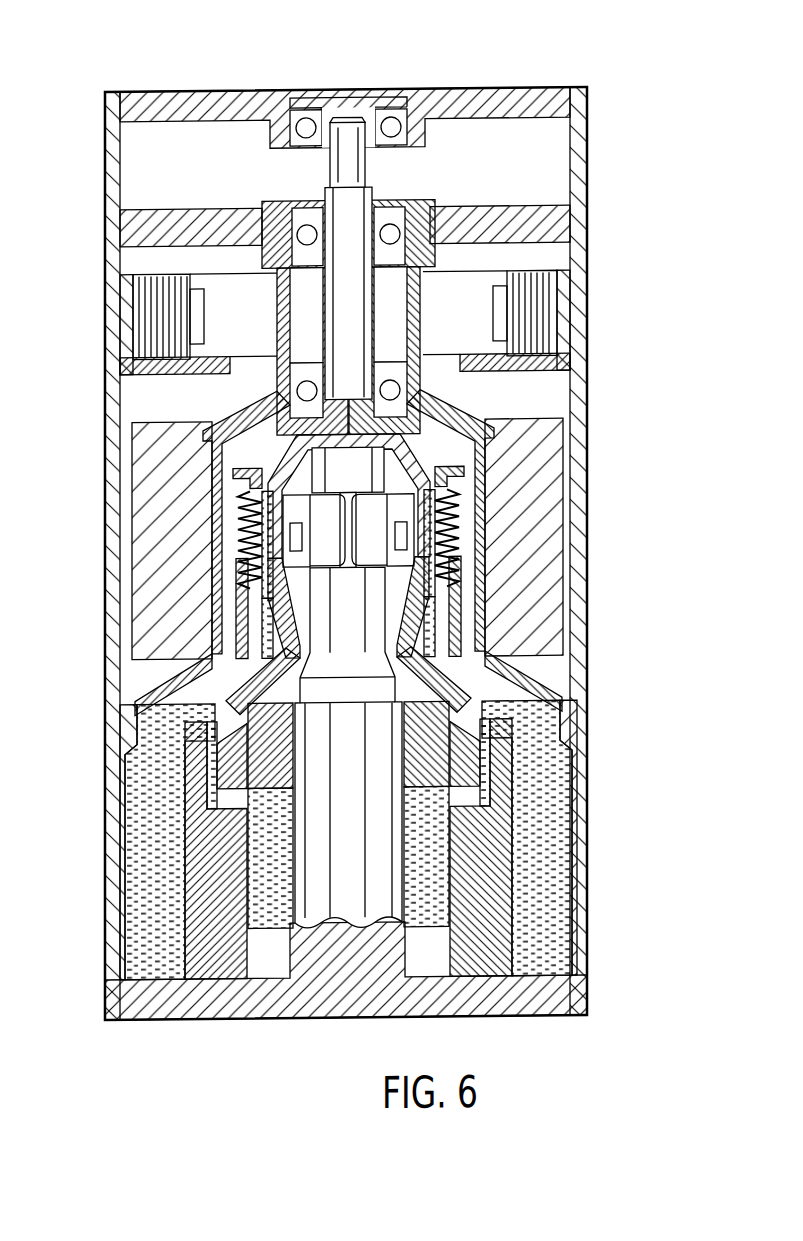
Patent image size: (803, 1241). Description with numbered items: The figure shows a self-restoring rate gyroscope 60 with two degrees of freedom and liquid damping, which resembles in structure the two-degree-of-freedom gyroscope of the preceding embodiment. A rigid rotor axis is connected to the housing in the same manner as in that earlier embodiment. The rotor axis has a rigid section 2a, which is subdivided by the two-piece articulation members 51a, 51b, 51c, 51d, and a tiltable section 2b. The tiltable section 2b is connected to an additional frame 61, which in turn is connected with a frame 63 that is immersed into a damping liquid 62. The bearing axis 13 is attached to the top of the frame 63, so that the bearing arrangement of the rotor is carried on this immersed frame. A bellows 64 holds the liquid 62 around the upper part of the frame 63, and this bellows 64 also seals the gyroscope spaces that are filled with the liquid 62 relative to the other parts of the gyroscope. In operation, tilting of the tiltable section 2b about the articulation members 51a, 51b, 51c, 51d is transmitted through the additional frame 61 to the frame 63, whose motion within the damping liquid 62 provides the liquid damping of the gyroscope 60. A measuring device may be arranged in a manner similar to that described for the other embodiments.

The rate gyroscope 60 is at (546, 74).
The bearing axis 13 is at (355, 321).
The tiltable section 2b is at (355, 474).
The bellows 64 is at (236, 492).
The articulation member 51a is at (463, 504).
The articulation member 51b is at (520, 512).
The articulation member 51c is at (415, 568).
The articulation member 51d is at (258, 566).
The additional frame 61 is at (462, 618).
The frame 63 is at (455, 681).
The damping liquid 62 is at (170, 721).
The rigid section 2a is at (382, 776).